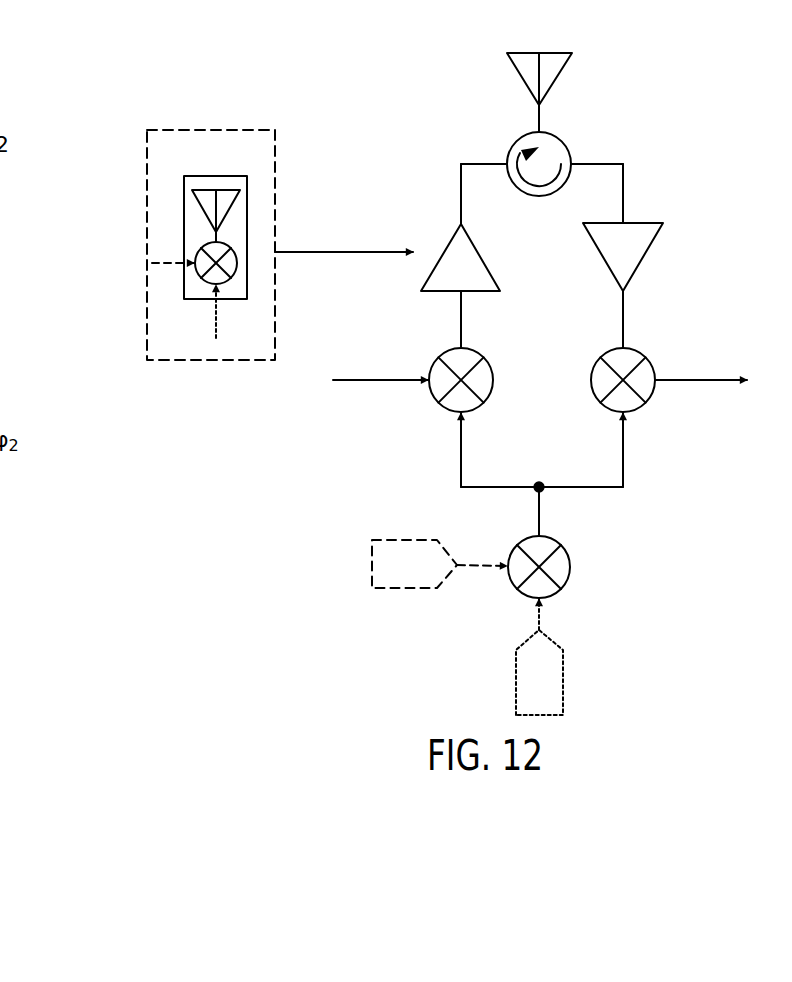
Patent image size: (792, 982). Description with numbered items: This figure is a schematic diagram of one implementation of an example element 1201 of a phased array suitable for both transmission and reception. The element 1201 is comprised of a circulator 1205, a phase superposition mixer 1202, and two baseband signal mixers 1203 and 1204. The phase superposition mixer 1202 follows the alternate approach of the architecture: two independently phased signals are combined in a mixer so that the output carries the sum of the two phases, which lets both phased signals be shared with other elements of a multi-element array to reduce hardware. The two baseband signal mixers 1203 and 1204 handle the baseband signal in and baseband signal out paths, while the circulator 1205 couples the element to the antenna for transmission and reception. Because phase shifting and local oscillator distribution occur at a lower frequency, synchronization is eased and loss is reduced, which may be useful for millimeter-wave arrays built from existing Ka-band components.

The element 1201 is at (240, 130).
The phase superposition mixer 1202 is at (555, 542).
The baseband signal mixer 1203 is at (430, 365).
The baseband signal mixer 1204 is at (643, 356).
The circulator 1205 is at (567, 142).